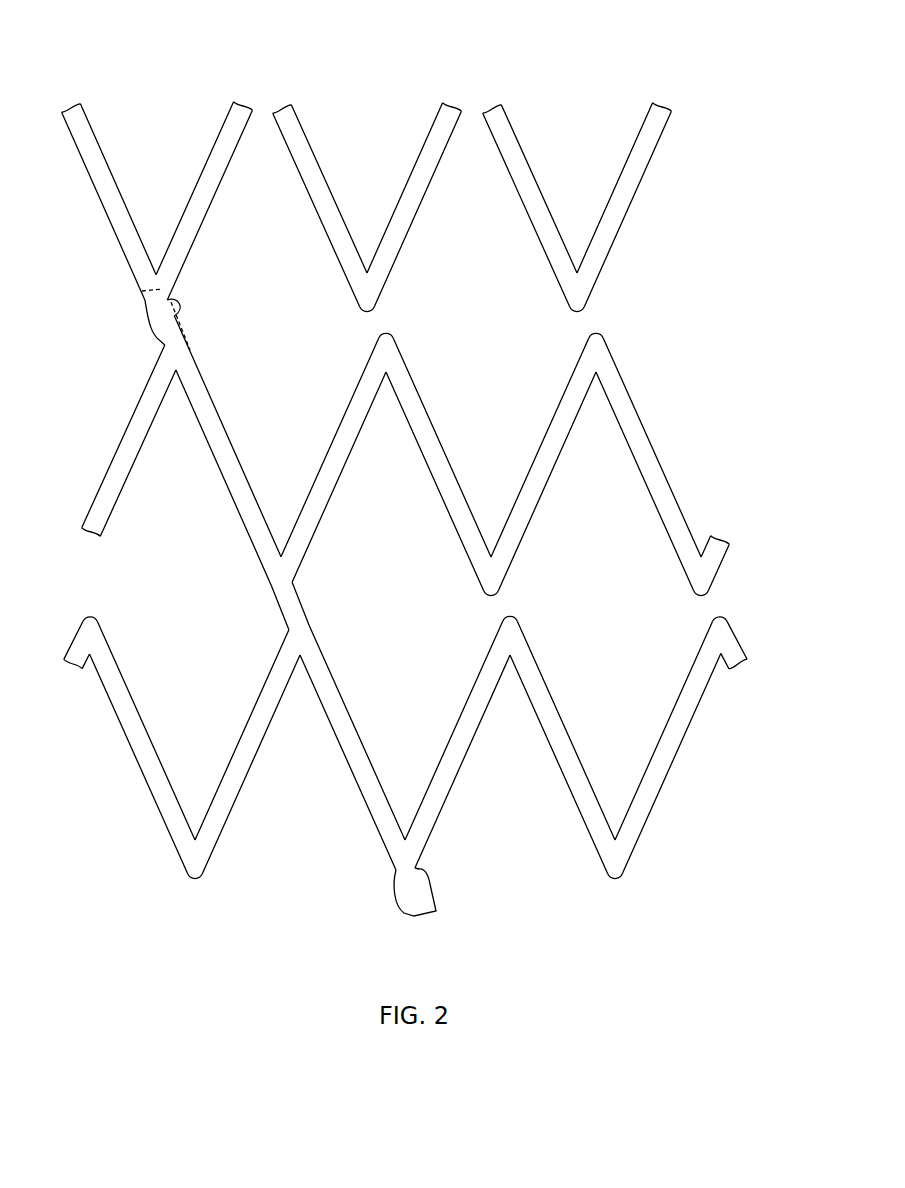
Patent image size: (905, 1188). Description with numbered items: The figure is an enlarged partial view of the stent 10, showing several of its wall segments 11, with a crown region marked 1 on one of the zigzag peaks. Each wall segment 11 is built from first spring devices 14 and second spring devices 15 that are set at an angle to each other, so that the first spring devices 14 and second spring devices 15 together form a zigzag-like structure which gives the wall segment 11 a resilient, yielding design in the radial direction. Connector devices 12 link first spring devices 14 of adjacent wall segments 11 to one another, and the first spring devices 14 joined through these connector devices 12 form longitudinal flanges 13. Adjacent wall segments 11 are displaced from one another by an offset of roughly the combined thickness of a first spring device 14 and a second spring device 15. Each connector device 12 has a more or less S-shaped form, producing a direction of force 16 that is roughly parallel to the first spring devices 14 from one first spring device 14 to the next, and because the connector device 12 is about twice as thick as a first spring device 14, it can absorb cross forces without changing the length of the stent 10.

The crown 1 is at (512, 628).
The stent 10 is at (755, 55).
The wall segment 11 is at (750, 146).
The connector device 12 is at (178, 310).
The longitudinal flange 13 is at (432, 936).
The first spring device 14 is at (107, 187).
The second spring device 15 is at (212, 172).
The direction of force 16 is at (160, 290).